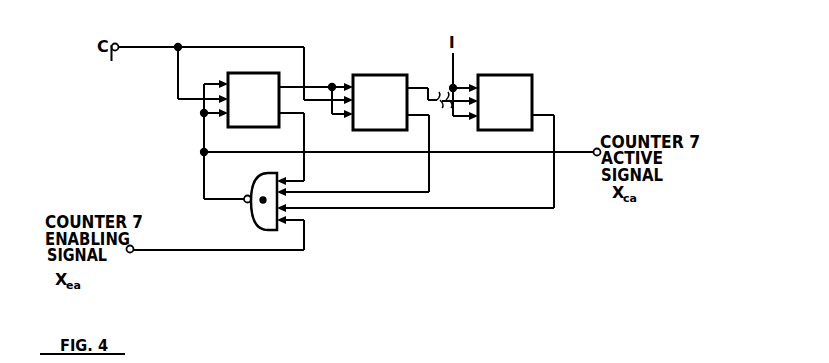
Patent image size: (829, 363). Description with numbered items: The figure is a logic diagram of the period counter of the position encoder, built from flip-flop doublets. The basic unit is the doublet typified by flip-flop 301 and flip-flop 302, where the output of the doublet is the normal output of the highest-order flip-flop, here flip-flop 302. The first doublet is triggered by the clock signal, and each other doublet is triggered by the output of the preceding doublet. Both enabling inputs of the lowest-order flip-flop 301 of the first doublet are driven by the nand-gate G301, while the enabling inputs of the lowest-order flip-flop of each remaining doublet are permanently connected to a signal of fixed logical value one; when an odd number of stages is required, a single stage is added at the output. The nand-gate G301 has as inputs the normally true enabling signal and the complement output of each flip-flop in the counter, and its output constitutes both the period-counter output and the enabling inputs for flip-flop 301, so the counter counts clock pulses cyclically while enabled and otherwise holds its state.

The flip-flop 301 is at (245, 82).
The flip-flop 302 is at (378, 83).
The nand-gate G301 is at (258, 212).